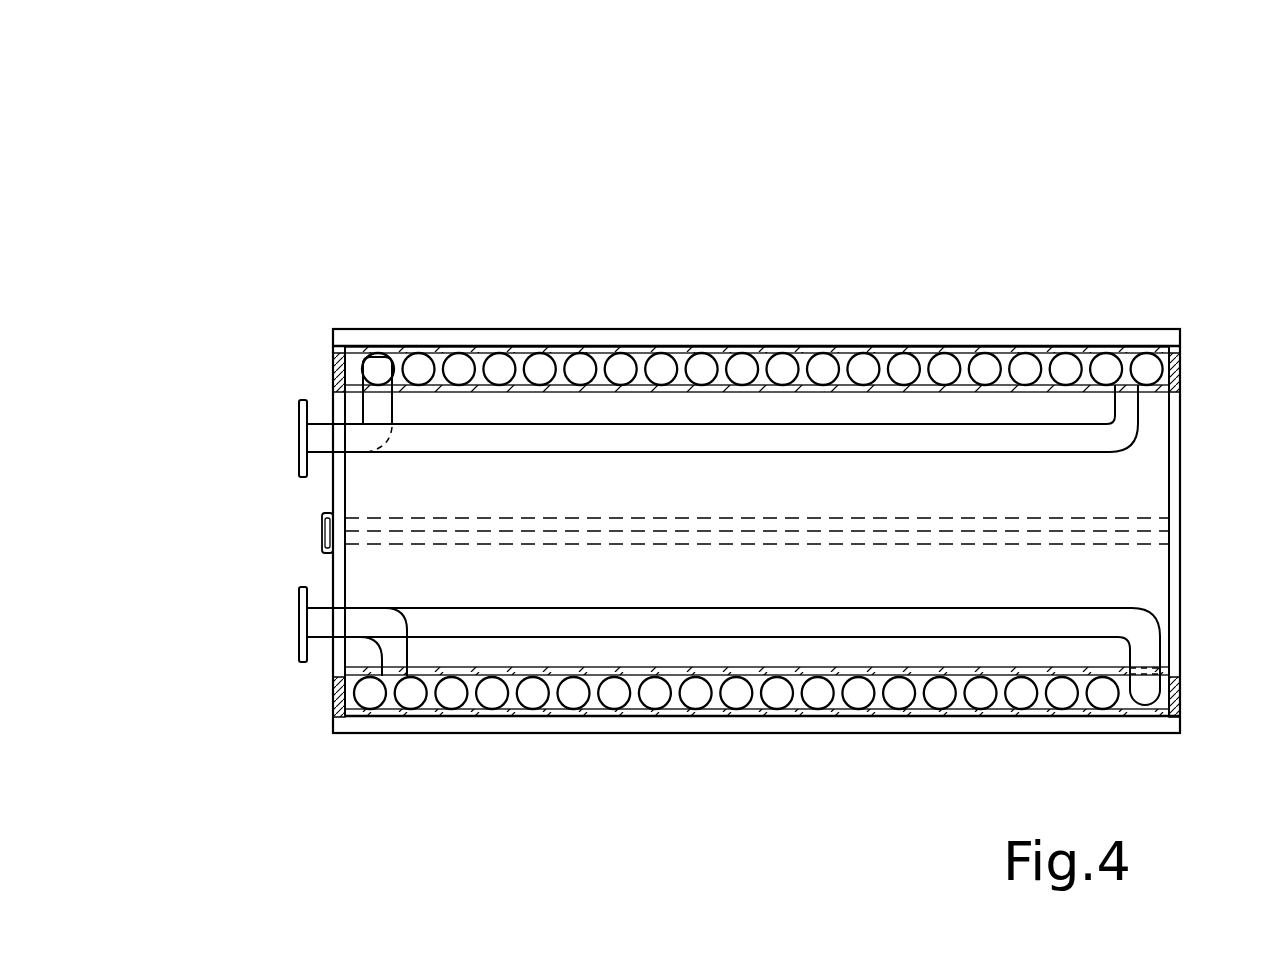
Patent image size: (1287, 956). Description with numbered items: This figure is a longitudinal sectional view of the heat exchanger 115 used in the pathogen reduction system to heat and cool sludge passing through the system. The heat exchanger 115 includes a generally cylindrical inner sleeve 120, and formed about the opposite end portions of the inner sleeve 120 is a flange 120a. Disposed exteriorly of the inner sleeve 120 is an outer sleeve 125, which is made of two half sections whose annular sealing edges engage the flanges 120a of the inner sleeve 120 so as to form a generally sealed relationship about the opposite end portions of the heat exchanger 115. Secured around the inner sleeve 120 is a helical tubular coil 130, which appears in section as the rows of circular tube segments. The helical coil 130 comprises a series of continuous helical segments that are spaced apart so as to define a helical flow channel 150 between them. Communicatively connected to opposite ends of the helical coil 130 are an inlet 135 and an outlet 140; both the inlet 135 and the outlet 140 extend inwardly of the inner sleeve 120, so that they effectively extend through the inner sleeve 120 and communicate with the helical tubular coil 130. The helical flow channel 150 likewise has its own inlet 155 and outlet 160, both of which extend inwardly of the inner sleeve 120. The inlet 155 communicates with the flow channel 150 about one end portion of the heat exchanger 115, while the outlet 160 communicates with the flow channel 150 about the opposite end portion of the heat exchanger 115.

The heat exchanger 115 is at (1062, 188).
The inner sleeve 120 is at (1176, 492).
The flange 120a is at (335, 503).
The outer sleeve 125 is at (470, 313).
The helical tubular coil 130 is at (700, 360).
The inlet 135 is at (372, 406).
The outlet 140 is at (298, 620).
The helical flow channel 150 is at (958, 360).
The inlet 155 is at (297, 437).
The outlet 160 is at (383, 651).